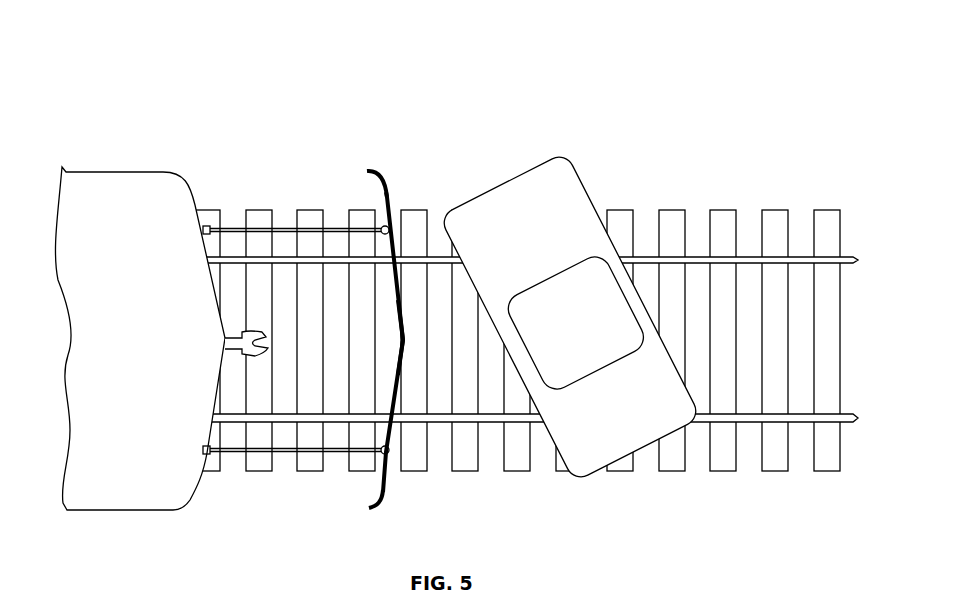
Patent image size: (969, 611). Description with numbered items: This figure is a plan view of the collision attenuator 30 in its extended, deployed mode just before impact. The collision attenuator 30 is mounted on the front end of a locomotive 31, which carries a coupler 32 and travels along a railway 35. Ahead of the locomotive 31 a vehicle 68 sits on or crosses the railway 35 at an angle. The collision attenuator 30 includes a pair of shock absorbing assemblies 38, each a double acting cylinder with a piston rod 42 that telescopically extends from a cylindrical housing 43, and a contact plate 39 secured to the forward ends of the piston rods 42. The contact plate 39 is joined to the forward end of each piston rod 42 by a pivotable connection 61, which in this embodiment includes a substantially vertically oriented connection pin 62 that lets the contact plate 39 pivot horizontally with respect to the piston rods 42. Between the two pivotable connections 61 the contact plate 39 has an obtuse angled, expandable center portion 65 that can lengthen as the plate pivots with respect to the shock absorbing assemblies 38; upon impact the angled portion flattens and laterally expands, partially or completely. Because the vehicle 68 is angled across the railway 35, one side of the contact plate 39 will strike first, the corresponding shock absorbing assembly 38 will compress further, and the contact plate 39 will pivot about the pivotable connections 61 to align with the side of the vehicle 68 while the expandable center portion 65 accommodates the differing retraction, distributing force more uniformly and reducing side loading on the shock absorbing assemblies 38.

The collision attenuator 30 is at (398, 116).
The locomotive 31 is at (152, 158).
The coupler 32 is at (218, 345).
The railway 35 is at (697, 248).
The shock absorbing assembly 38 is at (232, 216).
The contact plate 39 is at (387, 185).
The piston rod 42 is at (288, 228).
The cylindrical housing 43 is at (211, 456).
The pivotable connection 61 is at (380, 222).
The connection pin 62 is at (391, 200).
The expandable center portion 65 is at (412, 353).
The vehicle 68 is at (563, 140).